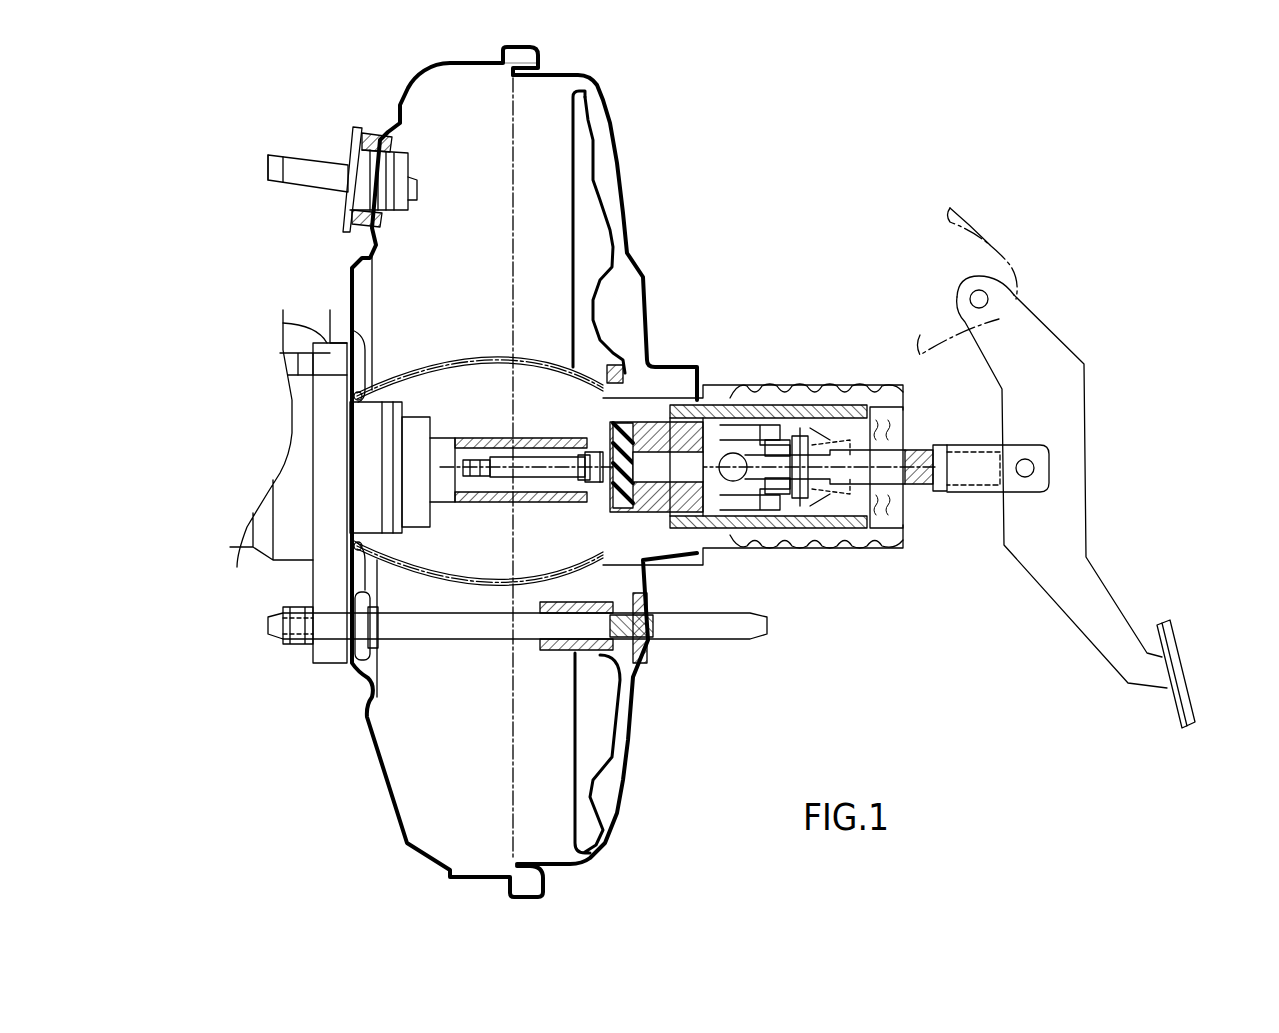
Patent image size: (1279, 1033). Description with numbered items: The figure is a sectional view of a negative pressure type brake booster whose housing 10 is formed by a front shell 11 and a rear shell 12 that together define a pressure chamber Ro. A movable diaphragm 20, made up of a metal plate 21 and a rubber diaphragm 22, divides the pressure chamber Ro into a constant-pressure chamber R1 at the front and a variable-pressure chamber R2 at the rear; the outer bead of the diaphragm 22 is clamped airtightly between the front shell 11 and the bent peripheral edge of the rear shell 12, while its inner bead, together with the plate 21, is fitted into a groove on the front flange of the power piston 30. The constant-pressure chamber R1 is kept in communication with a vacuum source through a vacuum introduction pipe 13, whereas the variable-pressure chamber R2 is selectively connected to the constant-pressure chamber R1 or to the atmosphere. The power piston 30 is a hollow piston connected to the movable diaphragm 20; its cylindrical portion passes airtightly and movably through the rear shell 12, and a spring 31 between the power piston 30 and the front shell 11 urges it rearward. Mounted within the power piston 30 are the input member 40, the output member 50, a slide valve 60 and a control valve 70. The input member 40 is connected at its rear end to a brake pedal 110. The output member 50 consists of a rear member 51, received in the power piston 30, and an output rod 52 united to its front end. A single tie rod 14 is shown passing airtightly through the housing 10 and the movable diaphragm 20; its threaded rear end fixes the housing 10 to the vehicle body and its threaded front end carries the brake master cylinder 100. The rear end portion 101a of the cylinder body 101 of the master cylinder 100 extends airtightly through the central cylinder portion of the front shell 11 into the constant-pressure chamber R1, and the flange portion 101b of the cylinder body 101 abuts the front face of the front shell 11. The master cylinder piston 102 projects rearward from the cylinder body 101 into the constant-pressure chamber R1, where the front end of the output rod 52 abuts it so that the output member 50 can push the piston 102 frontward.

The housing 10 is at (555, 65).
The front shell 11 is at (400, 110).
The rear shell 12 is at (608, 98).
The vacuum introduction pipe 13 is at (317, 180).
The tie rod 14 is at (437, 637).
The movable diaphragm 20 is at (624, 354).
The plate 21 is at (574, 103).
The diaphragm 22 is at (597, 117).
The power piston 30 is at (780, 380).
The spring 31 is at (358, 345).
The input member 40 is at (920, 445).
The output member 50 is at (557, 503).
The rear member 51 is at (598, 452).
The output rod 52 is at (483, 476).
The slide valve 60 is at (780, 512).
The control valve 70 is at (803, 508).
The brake master cylinder 100 is at (337, 542).
The cylinder body 101 is at (297, 467).
The rear end portion 101a is at (357, 440).
The flange portion 101b is at (320, 578).
The piston 102 is at (447, 442).
The brake pedal 110 is at (1182, 650).
The constant-pressure chamber R1 is at (463, 120).
The variable-pressure chamber R2 is at (615, 283).
The pressure chamber Ro is at (417, 800).